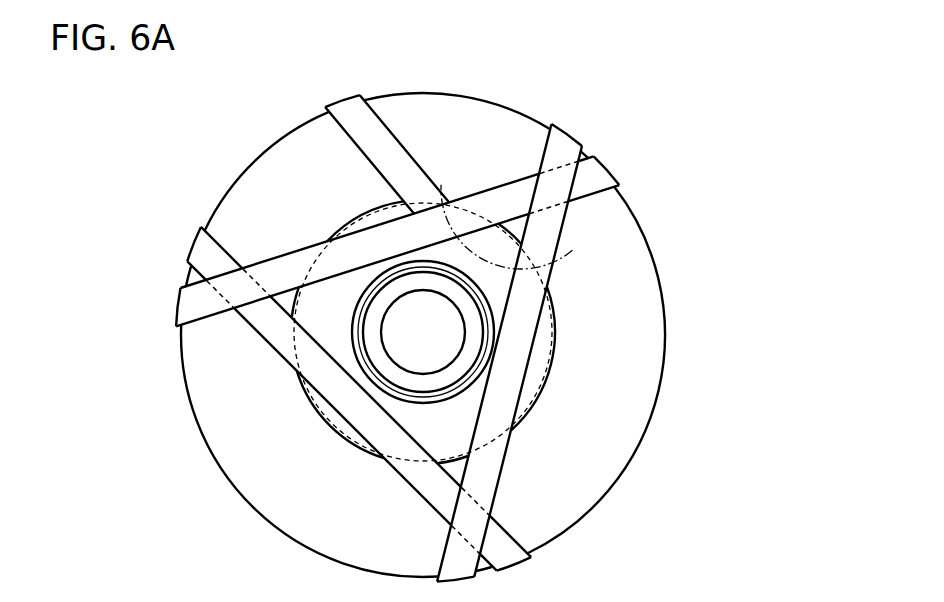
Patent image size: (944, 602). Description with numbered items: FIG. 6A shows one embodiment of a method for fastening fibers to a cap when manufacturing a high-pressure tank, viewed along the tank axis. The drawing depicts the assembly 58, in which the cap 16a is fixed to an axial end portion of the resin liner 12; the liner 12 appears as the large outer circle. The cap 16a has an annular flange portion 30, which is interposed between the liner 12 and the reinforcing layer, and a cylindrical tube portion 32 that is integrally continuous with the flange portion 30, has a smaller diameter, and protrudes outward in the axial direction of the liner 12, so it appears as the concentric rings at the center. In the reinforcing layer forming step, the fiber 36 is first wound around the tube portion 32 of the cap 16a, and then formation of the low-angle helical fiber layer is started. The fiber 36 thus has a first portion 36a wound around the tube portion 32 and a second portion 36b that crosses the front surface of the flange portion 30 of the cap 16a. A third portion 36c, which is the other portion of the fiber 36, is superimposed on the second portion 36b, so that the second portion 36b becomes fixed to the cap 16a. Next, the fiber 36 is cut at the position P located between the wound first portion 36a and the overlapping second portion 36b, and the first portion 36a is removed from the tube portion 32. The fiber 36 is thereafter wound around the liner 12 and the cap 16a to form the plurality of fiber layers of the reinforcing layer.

The liner 12 is at (268, 144).
The cap 16a is at (343, 226).
The assembly 58 is at (153, 107).
The flange portion 30 is at (330, 325).
The tube portion 32 is at (387, 367).
The fiber 36 is at (352, 110).
The first portion 36a is at (453, 400).
The second portion 36b is at (438, 217).
The third portion 36c is at (458, 218).
The position P is at (548, 270).